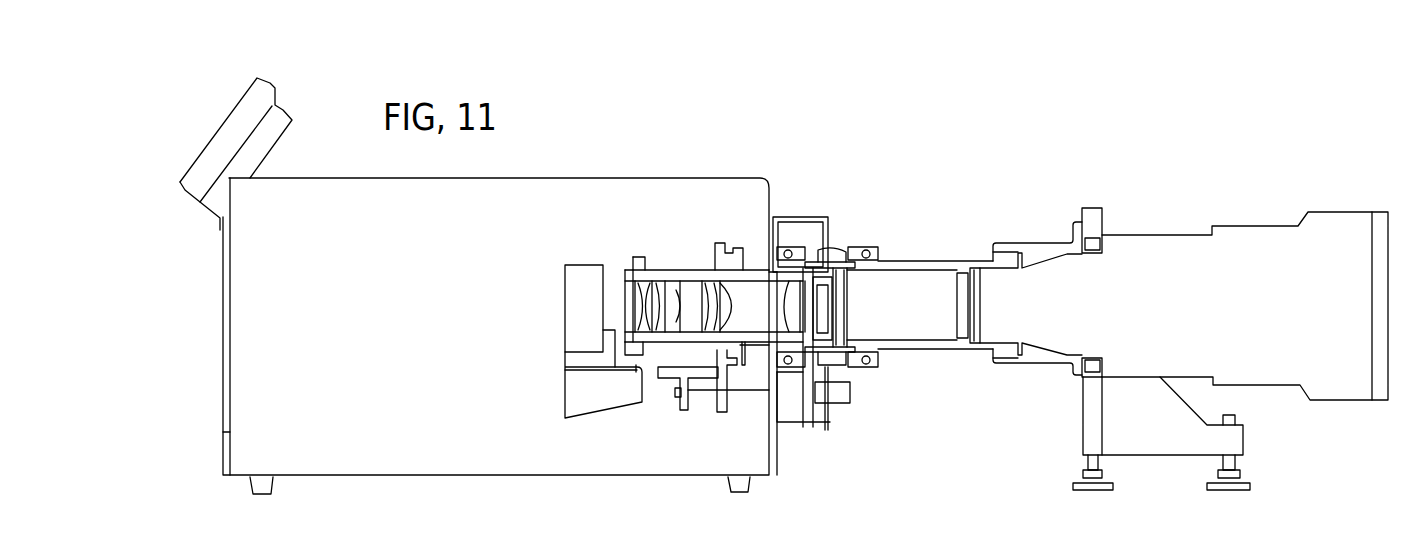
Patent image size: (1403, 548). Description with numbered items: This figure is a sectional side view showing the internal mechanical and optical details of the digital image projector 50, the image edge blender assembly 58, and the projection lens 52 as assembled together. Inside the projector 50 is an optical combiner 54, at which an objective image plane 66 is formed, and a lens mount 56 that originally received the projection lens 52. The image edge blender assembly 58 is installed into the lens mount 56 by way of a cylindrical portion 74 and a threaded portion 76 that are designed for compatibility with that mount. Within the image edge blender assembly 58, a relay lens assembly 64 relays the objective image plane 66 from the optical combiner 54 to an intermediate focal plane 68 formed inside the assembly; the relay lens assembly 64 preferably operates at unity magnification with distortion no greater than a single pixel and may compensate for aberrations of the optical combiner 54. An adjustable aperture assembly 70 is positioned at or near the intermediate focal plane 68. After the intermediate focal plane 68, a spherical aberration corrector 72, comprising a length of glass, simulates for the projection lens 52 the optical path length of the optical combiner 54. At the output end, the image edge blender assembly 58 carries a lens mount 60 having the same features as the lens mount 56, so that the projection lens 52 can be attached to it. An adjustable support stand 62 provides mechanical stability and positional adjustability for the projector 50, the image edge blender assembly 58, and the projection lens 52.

The digital image projector 50 is at (374, 195).
The projection lens 52 is at (1325, 390).
The optical combiner 54 is at (578, 315).
The lens mount 56 is at (645, 258).
The image edge blender assembly 58 is at (890, 214).
The lens mount 60 is at (1003, 257).
The adjustable support stand 62 is at (1147, 433).
The relay lens assembly 64 is at (766, 242).
The objective image plane 66 is at (612, 302).
The intermediate focal plane 68 is at (848, 308).
The adjustable aperture assembly 70 is at (838, 236).
The spherical aberration corrector 72 is at (925, 283).
The cylindrical portion 74 is at (674, 278).
The threaded portion 76 is at (727, 254).